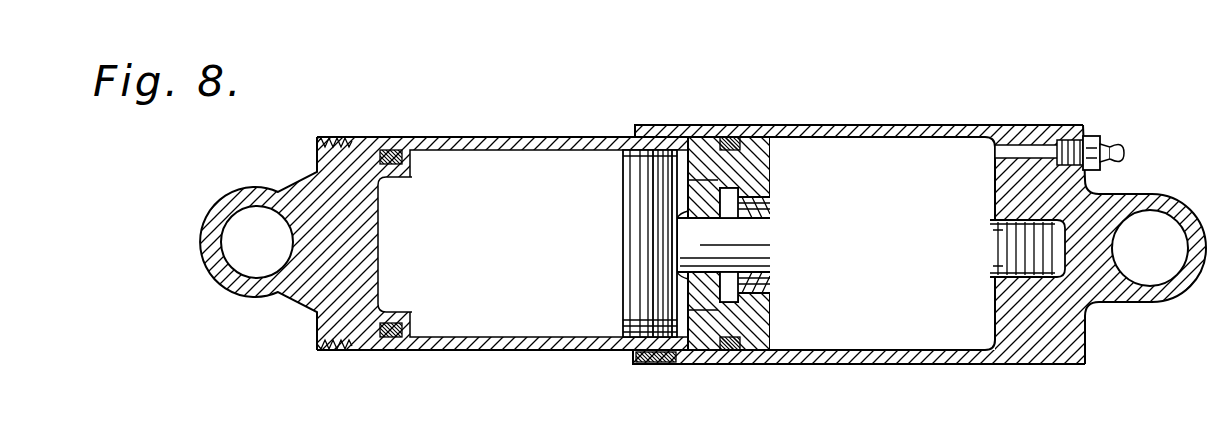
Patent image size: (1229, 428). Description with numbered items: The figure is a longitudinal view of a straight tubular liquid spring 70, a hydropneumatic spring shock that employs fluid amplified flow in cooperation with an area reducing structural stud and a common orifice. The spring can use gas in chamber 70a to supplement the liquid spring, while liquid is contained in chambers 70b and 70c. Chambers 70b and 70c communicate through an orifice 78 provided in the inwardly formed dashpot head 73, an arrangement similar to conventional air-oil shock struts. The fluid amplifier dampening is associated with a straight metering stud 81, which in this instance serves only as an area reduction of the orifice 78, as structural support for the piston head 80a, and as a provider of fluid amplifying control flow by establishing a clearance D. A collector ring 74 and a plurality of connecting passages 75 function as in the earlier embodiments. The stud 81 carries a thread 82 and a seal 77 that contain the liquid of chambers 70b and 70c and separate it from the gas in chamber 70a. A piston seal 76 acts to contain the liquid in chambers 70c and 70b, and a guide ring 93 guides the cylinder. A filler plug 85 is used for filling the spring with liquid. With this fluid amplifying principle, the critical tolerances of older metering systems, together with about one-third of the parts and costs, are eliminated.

The straight tubular liquid spring 70 is at (868, 117).
The gas chamber 70a is at (489, 168).
The liquid chamber 70b is at (705, 128).
The liquid chamber 70c is at (966, 162).
The inwardly formed dashpot head 73 is at (758, 150).
The collector ring 74 is at (682, 158).
The connecting passages 75 is at (745, 293).
The piston seal 76 is at (728, 362).
The seal 77 is at (645, 255).
The orifice 78 is at (745, 212).
The piston head 80a is at (625, 294).
The straight metering stud 81 is at (916, 263).
The thread 82 is at (1030, 277).
The filler plug 85 is at (1096, 136).
The guide ring 93 is at (656, 364).
The clearance D is at (700, 220).